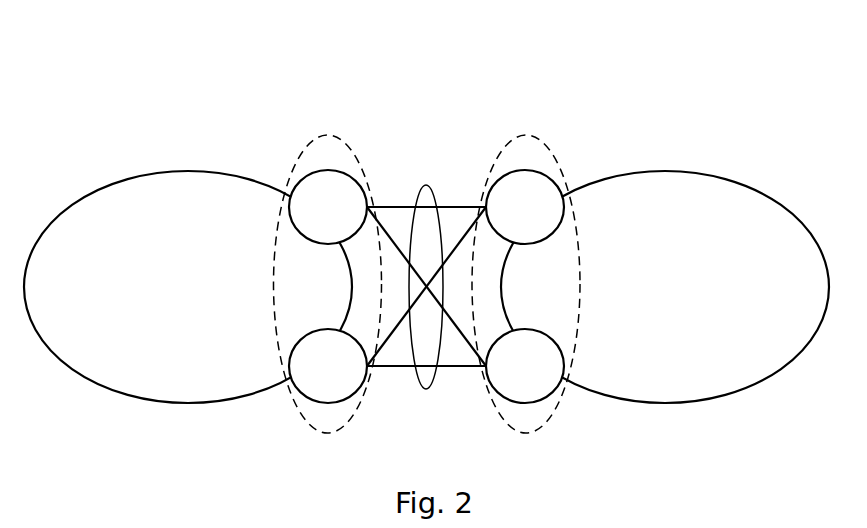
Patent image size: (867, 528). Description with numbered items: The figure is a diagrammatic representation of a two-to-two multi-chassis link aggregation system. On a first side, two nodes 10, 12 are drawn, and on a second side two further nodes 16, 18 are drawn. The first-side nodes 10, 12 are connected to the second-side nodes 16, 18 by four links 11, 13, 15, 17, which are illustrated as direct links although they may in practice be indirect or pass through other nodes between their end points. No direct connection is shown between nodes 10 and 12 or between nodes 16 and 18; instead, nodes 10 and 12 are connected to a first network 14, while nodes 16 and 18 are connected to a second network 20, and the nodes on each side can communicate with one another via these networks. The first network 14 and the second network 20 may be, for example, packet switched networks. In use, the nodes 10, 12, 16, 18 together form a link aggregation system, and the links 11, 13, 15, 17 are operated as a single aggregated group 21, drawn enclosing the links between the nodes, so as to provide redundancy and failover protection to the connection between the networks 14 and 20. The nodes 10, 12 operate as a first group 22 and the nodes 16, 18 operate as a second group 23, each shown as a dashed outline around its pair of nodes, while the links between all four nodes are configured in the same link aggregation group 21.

The node 10 is at (328, 207).
The node 12 is at (328, 366).
The node 16 is at (525, 207).
The node 18 is at (525, 366).
The first network 14 is at (188, 287).
The second network 20 is at (665, 287).
The link 11 is at (395, 205).
The link 13 is at (463, 230).
The link 15 is at (390, 368).
The link 17 is at (463, 347).
The link aggregation group 21 is at (425, 185).
The first group 22 is at (325, 135).
The second group 23 is at (528, 135).